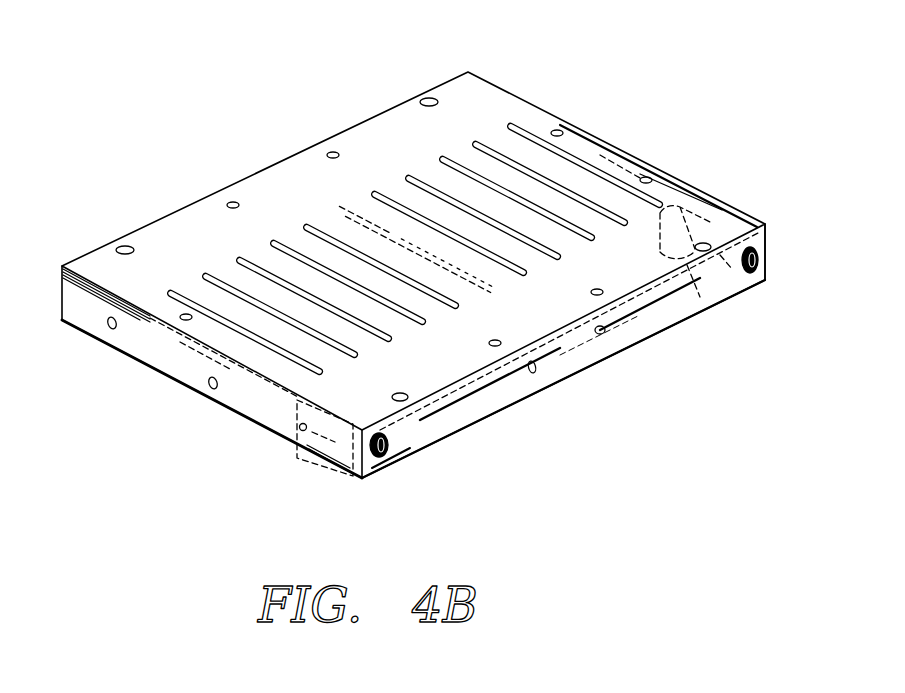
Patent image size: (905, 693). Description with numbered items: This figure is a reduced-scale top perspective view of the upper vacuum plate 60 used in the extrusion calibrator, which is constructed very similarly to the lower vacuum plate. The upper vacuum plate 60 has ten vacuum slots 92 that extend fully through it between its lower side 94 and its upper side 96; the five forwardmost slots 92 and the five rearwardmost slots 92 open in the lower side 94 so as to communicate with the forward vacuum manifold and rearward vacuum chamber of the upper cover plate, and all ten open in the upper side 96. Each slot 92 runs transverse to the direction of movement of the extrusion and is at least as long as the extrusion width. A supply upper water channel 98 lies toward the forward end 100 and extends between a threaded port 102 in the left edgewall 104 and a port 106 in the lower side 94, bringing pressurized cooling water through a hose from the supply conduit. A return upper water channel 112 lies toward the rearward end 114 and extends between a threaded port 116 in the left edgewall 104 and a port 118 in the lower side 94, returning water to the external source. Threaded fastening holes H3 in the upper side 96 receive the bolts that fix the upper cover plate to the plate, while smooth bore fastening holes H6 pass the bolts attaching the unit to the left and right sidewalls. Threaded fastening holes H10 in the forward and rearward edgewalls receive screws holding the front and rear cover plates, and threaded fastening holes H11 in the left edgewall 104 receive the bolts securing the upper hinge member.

The upper vacuum plate 60 is at (234, 414).
The vacuum slots 92 is at (528, 66).
The lower side 94 is at (482, 426).
The upper side 96 is at (567, 322).
The supply upper water channel 98 is at (352, 452).
The forward end 100 is at (185, 375).
The threaded port 102 is at (388, 457).
The left edgewall 104 is at (440, 428).
The port 106 is at (299, 448).
The return upper water channel 112 is at (726, 198).
The rearward end 114 is at (635, 157).
The threaded port 116 is at (767, 281).
The port 118 is at (700, 300).
The threaded fastening holes H3 is at (333, 152).
The smooth bore fastening holes H6 is at (430, 97).
The threaded fastening holes H10 is at (110, 322).
The threaded fastening holes H11 is at (532, 374).